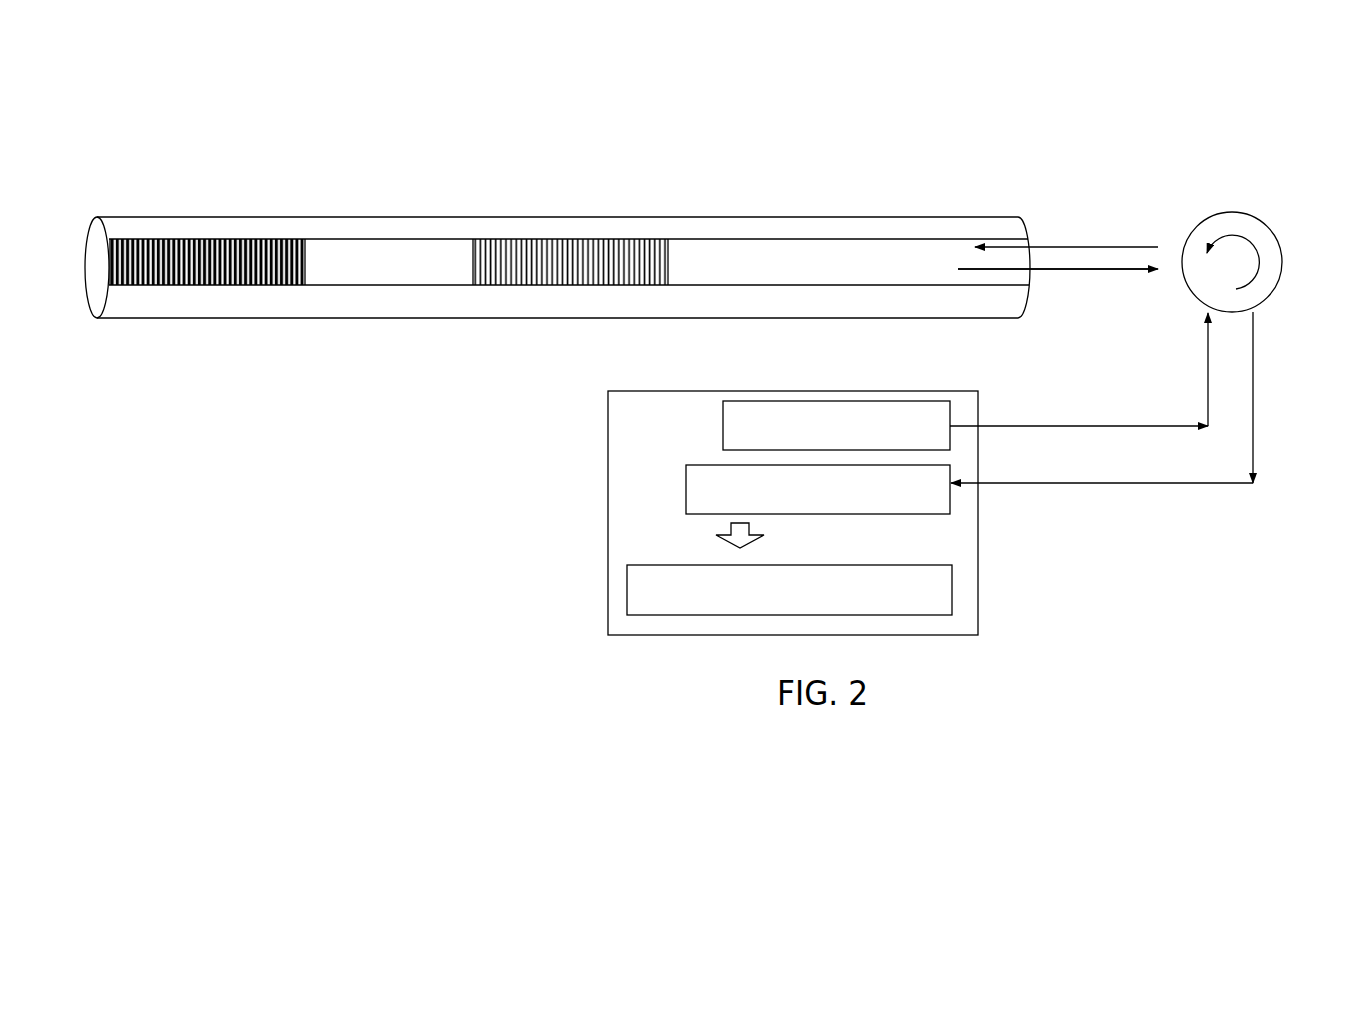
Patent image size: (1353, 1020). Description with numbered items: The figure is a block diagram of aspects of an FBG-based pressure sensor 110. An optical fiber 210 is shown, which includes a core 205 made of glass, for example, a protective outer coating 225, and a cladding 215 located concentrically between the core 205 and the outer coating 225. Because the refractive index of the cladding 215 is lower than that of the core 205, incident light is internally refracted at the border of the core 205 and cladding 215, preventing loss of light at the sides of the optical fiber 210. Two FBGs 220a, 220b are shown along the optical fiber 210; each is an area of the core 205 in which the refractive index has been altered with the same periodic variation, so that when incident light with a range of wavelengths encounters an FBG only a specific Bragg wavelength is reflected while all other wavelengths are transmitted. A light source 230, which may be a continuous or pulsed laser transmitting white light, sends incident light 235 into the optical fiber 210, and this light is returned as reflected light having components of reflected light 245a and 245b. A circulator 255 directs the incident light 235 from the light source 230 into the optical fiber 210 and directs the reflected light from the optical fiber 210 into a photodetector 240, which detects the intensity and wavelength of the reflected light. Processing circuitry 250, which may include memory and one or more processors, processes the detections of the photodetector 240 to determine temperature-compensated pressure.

The FBG-based pressure sensor 110 is at (1212, 103).
The core 205 is at (764, 240).
The optical fiber 210 is at (195, 170).
The cladding 215 is at (846, 228).
The FBG 220a is at (558, 233).
The FBG 220b is at (215, 232).
The protective outer coating 225 is at (915, 217).
The light source 230 is at (965, 381).
The incident light 235 is at (1066, 231).
The photodetector 240 is at (969, 413).
The reflected light 245a is at (1058, 290).
The reflected light 245b is at (1054, 308).
The processing circuitry 250 is at (789, 590).
The circulator 255 is at (1233, 213).